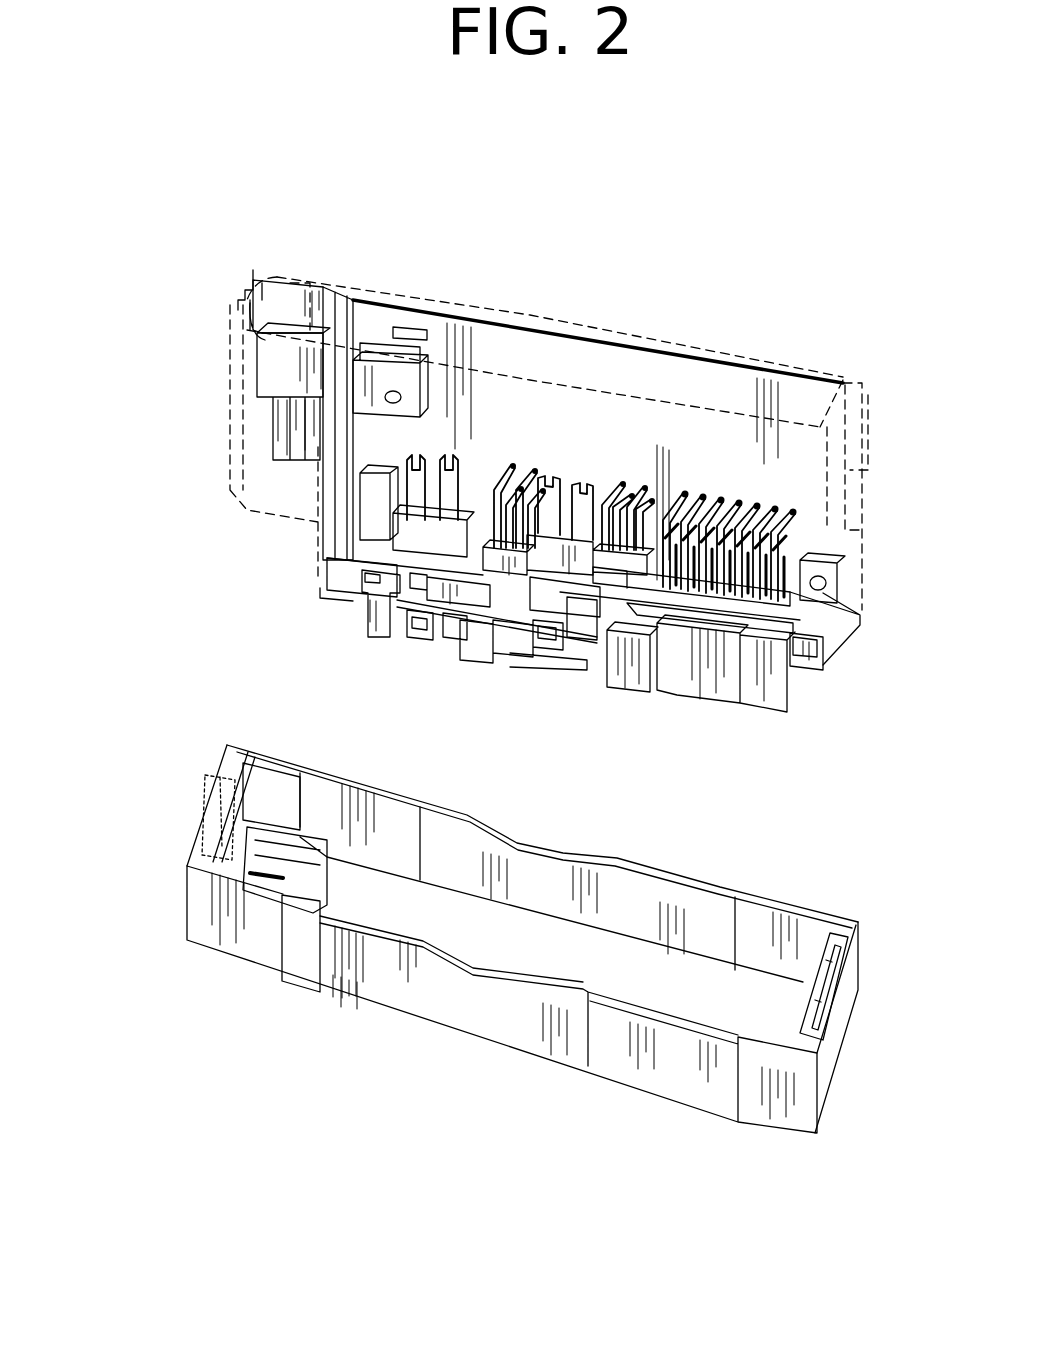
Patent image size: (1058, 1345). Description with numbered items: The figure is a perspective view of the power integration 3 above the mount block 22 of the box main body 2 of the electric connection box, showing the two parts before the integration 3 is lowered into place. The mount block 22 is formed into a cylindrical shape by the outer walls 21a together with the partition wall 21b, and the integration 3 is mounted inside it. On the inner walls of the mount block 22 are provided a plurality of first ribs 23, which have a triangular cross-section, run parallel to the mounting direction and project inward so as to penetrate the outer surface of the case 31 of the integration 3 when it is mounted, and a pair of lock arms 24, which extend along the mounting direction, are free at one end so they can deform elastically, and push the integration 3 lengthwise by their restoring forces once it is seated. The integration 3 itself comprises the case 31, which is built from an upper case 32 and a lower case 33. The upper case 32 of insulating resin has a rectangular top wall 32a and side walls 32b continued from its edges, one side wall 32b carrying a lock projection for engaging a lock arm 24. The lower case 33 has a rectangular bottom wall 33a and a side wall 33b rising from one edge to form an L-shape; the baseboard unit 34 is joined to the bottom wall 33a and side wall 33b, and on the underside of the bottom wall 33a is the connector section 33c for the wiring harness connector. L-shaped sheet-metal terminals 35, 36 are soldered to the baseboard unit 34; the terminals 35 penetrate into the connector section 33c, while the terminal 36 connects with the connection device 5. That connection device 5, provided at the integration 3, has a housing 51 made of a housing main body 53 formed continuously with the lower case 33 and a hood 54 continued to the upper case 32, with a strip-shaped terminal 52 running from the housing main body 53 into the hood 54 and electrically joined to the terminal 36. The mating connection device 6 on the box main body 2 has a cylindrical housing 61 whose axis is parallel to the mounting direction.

The box main body 2 is at (499, 918).
The power integration 3 is at (560, 438).
The connection device 5 is at (275, 292).
The connection device 6 is at (290, 865).
The outer wall 21a is at (680, 870).
The partition wall 21b is at (187, 903).
The mount block 22 is at (499, 939).
The first rib 23 is at (300, 797).
The lock arm 24 is at (237, 807).
The case 31 is at (858, 208).
The upper case 32 is at (581, 428).
The top wall 32a is at (692, 378).
The side wall 32b is at (818, 367).
The lower case 33 is at (567, 520).
The bottom wall 33a is at (797, 667).
The side wall 33b is at (330, 480).
The connector section 33c is at (623, 690).
The baseboard unit 34 is at (498, 340).
The terminal 35 is at (767, 553).
The terminal 36 is at (397, 335).
The housing 51 is at (325, 172).
The terminal 52 is at (273, 414).
The housing main body 53 is at (252, 282).
The hood 54 is at (297, 280).
The housing 61 is at (317, 897).